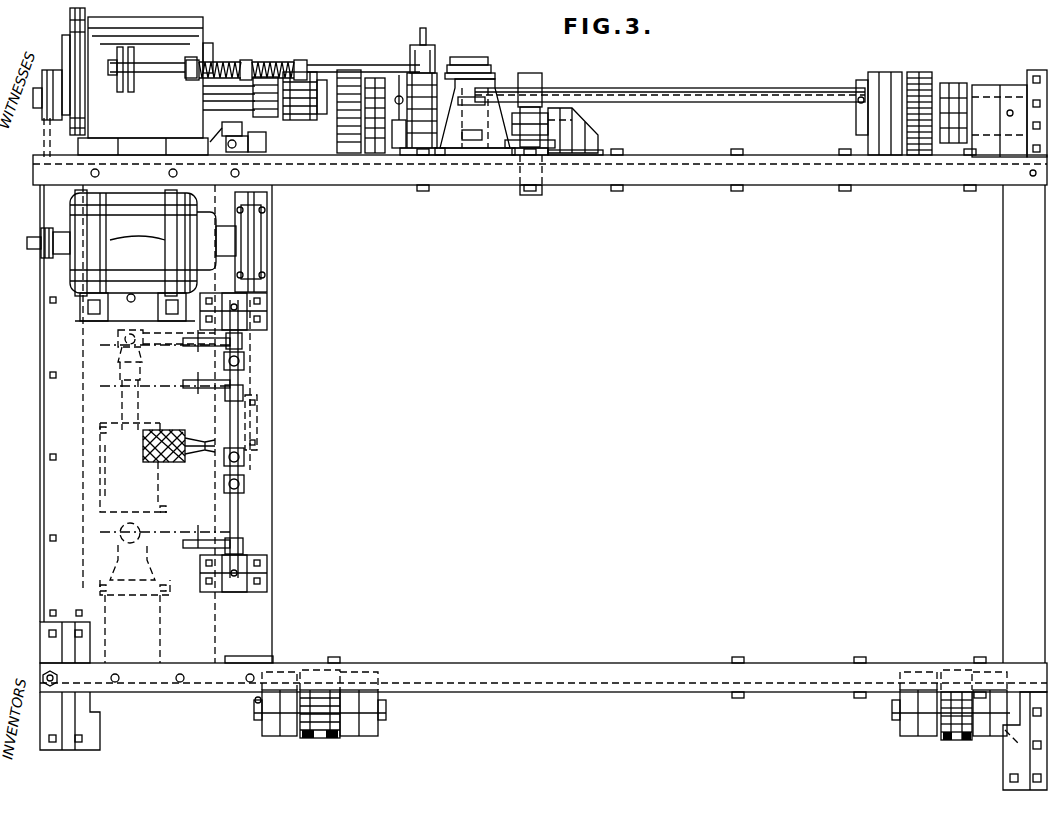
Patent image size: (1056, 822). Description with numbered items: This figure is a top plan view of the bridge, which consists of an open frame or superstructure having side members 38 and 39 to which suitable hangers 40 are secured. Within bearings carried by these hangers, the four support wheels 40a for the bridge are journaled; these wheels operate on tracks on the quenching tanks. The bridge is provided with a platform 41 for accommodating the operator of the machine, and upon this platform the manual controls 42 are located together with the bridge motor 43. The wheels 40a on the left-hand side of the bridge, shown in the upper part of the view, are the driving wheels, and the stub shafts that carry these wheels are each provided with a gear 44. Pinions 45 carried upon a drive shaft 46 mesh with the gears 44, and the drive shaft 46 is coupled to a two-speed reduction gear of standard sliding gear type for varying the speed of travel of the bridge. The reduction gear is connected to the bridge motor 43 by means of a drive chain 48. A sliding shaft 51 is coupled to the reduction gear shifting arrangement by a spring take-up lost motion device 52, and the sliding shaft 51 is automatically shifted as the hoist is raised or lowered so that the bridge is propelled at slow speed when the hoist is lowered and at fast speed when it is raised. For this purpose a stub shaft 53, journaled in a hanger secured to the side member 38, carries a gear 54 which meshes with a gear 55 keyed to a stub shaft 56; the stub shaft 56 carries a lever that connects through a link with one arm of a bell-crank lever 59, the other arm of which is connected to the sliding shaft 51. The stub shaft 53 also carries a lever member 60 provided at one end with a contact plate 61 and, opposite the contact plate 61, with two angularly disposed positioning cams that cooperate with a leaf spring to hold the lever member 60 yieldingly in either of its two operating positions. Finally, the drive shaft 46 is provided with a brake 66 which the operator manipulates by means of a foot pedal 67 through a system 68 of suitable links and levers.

The side member 38 is at (697, 186).
The side member 39 is at (683, 662).
The hanger 40 is at (872, 125).
The support wheel 40a is at (311, 120).
The platform 41 is at (58, 489).
The manual controls 42 is at (206, 335).
The bridge motor 43 is at (70, 275).
The gear 44 is at (352, 135).
The pinion 45 is at (348, 76).
The drive shaft 46 is at (684, 90).
The drive chain 48 is at (45, 143).
The sliding shaft 51 is at (313, 70).
The spring take-up lost motion device 52 is at (228, 64).
The stub shaft 53 is at (575, 127).
The gear 54 is at (476, 112).
The gear 55 is at (458, 157).
The stub shaft 56 is at (466, 55).
The bell-crank lever 59 is at (486, 70).
The lever member 60 is at (543, 82).
The contact plate 61 is at (531, 192).
The brake 66 is at (422, 80).
The foot pedal 67 is at (170, 463).
The system of links and levers 68 is at (263, 147).